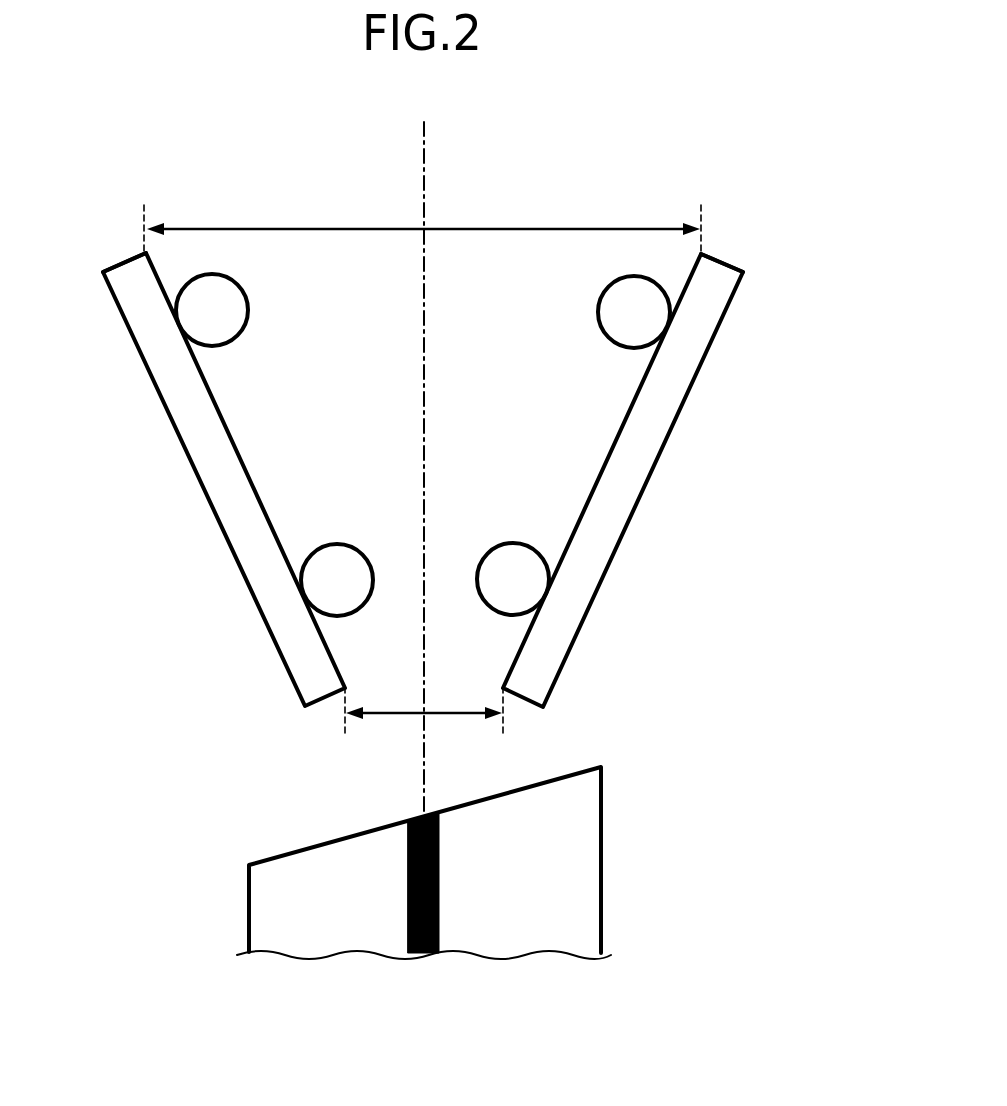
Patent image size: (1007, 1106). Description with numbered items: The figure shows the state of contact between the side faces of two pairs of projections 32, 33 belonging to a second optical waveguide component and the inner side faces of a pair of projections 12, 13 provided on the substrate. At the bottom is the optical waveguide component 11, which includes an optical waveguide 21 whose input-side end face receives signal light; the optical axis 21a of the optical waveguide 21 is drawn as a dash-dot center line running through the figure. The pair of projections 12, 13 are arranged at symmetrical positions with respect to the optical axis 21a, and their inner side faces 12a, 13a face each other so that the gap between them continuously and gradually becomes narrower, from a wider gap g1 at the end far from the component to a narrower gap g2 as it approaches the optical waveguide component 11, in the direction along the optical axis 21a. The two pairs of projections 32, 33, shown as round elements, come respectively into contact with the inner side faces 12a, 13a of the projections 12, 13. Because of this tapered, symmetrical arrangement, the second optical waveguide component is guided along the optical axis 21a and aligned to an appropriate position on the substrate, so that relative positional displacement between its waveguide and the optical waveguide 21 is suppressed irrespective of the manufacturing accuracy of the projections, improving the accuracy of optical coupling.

The optical waveguide component 11 is at (601, 816).
The optical waveguide 21 is at (439, 889).
The optical axis 21a is at (426, 132).
The projection 12 is at (631, 462).
The inner side face 12a is at (697, 260).
The projection 13 is at (212, 462).
The inner side face 13a is at (148, 259).
The projections 32 is at (669, 323).
The projections 33 is at (176, 323).
The gap g1 is at (507, 205).
The gap g2 is at (457, 688).